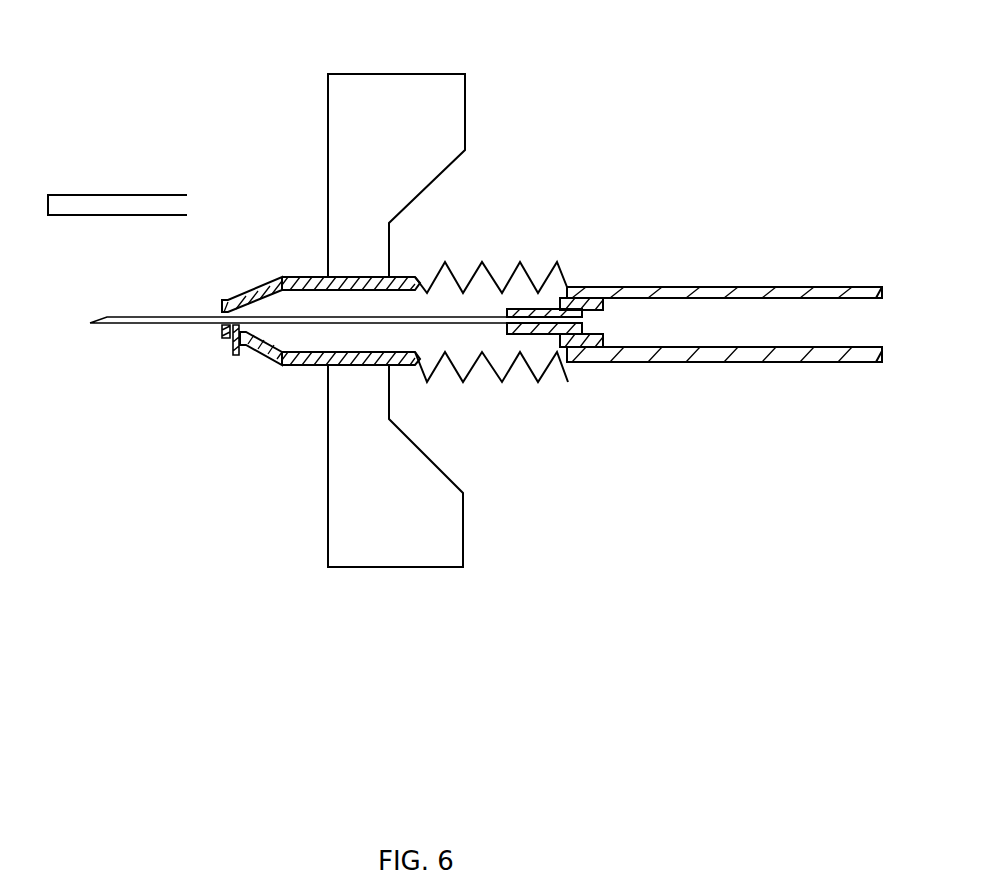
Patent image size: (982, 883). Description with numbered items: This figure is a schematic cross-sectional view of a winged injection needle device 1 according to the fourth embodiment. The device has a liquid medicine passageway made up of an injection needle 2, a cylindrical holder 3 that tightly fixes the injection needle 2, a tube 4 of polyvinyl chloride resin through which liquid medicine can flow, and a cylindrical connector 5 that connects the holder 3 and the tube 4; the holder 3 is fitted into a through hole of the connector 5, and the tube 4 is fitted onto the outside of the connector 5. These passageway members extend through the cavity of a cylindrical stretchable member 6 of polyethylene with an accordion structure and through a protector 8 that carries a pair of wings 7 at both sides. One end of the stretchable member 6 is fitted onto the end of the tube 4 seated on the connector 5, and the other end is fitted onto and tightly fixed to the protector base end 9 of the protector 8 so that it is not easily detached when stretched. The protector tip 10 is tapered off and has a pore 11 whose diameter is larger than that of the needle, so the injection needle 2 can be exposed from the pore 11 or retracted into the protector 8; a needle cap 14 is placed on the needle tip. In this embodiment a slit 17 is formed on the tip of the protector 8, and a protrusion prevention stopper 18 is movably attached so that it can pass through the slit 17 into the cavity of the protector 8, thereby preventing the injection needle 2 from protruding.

The winged injection needle device 1 is at (778, 183).
The injection needle 2 is at (117, 324).
The cylindrical holder 3 is at (518, 312).
The tube 4 is at (677, 357).
The cylindrical connector 5 is at (602, 288).
The cylindrical stretchable member 6 is at (430, 372).
The wings 7 is at (452, 92).
The protector 8 is at (320, 363).
The protector base end 9 is at (403, 278).
The protector tip 10 is at (253, 280).
The pore 11 is at (218, 330).
The needle cap 14 is at (100, 195).
The slit 17 is at (243, 347).
The protrusion prevention stopper 18 is at (237, 357).